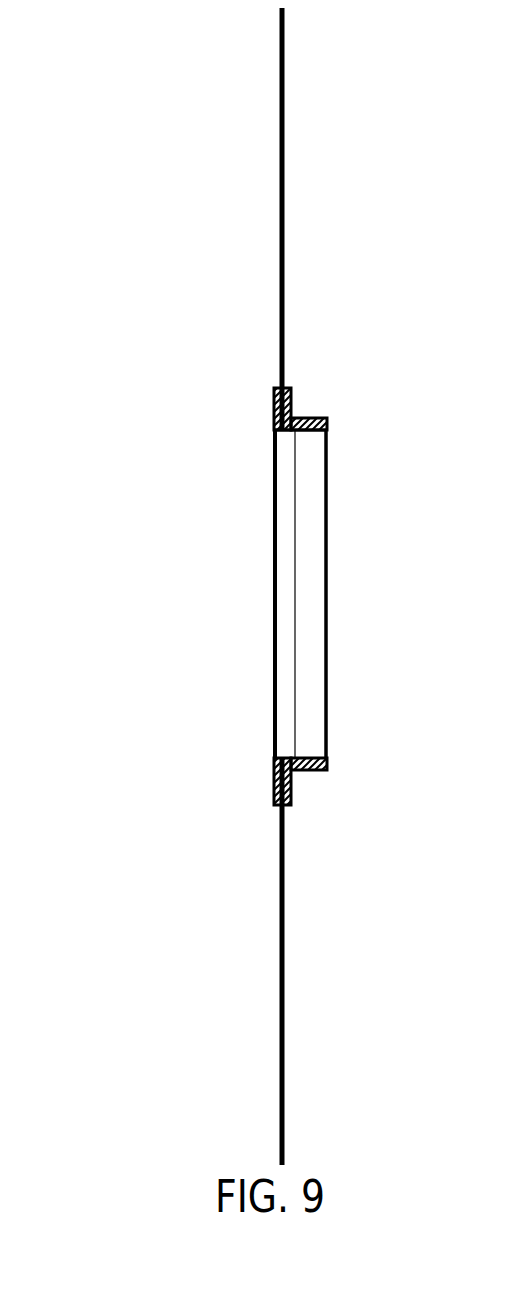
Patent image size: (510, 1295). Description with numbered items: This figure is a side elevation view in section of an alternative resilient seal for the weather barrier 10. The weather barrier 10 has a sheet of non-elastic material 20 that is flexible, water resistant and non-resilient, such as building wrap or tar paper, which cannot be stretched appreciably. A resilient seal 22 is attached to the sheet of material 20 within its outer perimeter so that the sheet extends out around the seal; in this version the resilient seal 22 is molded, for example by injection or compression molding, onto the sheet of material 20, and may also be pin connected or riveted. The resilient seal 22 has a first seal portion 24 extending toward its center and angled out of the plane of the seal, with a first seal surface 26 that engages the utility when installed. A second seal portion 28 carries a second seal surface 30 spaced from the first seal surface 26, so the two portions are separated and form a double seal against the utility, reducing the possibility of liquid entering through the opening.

The weather barrier 10 is at (146, 95).
The sheet of non-elastic material 20 is at (280, 212).
The resilient seal 22 is at (292, 400).
The first seal portion 24 is at (312, 421).
The first seal surface 26 is at (327, 429).
The second seal portion 28 is at (276, 428).
The second seal surface 30 is at (275, 437).